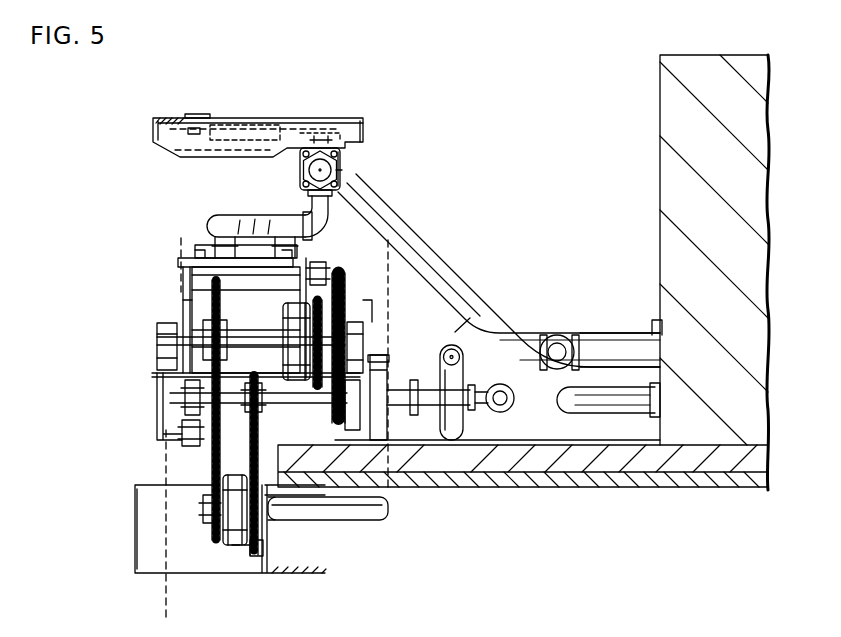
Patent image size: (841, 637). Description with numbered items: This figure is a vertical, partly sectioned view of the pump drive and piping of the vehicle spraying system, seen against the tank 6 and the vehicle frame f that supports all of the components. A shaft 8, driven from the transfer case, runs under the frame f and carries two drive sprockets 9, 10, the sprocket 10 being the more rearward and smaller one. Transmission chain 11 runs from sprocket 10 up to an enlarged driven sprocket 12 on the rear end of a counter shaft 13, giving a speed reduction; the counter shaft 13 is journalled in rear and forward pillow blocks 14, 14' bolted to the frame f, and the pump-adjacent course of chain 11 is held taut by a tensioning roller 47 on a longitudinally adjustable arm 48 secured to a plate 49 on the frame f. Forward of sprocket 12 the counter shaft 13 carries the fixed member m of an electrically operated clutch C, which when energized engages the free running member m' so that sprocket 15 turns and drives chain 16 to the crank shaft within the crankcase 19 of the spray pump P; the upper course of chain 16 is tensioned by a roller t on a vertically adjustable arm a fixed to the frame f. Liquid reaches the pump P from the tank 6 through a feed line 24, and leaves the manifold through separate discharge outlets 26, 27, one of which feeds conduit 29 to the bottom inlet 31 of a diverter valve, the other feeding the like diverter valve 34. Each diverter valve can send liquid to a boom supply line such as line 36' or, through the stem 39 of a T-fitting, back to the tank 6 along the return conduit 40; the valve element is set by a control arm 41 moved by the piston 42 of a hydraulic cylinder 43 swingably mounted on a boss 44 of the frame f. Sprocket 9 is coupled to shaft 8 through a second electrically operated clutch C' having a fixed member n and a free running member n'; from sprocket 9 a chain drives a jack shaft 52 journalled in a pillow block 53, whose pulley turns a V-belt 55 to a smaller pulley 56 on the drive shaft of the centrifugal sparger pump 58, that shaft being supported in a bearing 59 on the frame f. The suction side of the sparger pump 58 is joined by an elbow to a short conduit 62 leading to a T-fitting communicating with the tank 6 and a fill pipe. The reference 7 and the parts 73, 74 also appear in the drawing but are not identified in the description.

The tank 6 is at (676, 173).
The section line 7- 7 is at (168, 281).
The shaft 8 is at (407, 254).
The drive sprocket 9 is at (257, 558).
The drive sprocket 10 is at (212, 526).
The transmission chain 11 is at (211, 470).
The driven sprocket 12 is at (190, 304).
The counter shaft 13 is at (192, 340).
The rear pillow block 14 is at (125, 346).
The forward pillow block 14' is at (385, 367).
The sprocket 15 is at (331, 318).
The chain 16 is at (338, 303).
The crankcase 19 is at (255, 299).
The liquid feed line 24 is at (597, 402).
The discharge outlet 26 is at (200, 253).
The discharge outlet 27 is at (355, 226).
The conduit 29 is at (250, 218).
The inlet 31 is at (312, 203).
The diverter valve 34 is at (338, 160).
The boom supply line 36' is at (367, 165).
The stem 39 is at (343, 173).
The return conduit 40 is at (608, 350).
The control arm 41 is at (335, 120).
The piston 42 is at (300, 119).
The hydraulic cylinder 43 is at (242, 124).
The boss 44 is at (192, 118).
The tensioning roller 47 is at (183, 440).
The longitudinally adjustable arm 48 is at (160, 430).
The plate 49 is at (185, 393).
The jack shaft 52 is at (262, 403).
The pillow block 53 is at (345, 410).
The V-belt 55 is at (380, 377).
The pulley 56 is at (388, 393).
The sparger pump 58 is at (460, 365).
The bearing 59 is at (466, 424).
The short conduit 62 is at (515, 401).
The flange 73 is at (557, 345).
The flange 74 is at (574, 343).
The spray pump P is at (185, 259).
The electrically operated clutch C is at (278, 341).
The electrically operated clutch C' is at (230, 524).
The tension roller t is at (325, 272).
The vertically adjustable arm a is at (385, 318).
The vehicle frame f is at (160, 375).
The fixed clutch member m is at (281, 460).
The free running clutch member m' is at (297, 462).
The fixed clutch member n is at (210, 591).
The free running clutch member n' is at (234, 591).